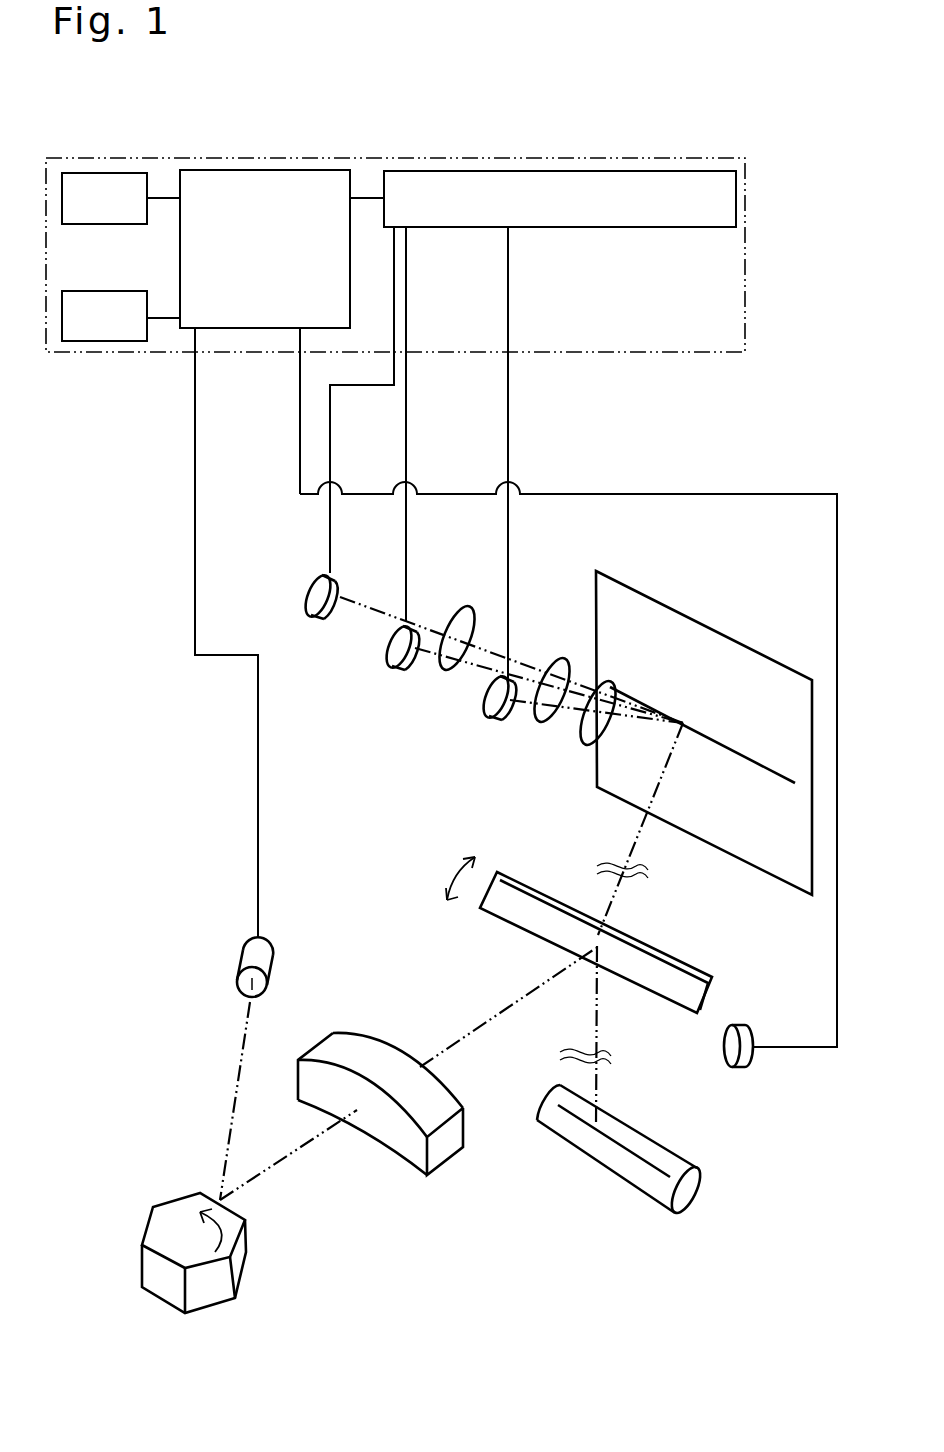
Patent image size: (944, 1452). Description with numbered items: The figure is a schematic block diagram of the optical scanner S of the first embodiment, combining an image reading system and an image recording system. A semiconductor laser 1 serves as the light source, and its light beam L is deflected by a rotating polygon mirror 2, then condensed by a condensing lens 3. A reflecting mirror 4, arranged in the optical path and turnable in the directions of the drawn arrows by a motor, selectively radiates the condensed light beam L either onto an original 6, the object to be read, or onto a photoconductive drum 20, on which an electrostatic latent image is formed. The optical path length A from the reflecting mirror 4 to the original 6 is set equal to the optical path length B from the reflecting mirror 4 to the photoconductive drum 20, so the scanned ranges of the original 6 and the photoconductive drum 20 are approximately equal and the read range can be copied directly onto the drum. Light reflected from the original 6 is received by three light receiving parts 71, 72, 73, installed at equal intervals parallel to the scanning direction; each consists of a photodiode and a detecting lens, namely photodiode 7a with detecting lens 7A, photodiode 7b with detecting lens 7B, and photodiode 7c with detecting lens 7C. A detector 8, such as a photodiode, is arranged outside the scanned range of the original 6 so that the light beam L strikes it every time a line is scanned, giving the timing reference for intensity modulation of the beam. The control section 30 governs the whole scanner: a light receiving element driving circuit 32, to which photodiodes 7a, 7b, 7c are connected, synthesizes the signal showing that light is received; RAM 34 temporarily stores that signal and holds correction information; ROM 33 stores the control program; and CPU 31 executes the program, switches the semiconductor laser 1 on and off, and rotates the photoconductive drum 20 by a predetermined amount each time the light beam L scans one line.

The control section 30 is at (741, 170).
The optical scanner S is at (595, 154).
The ROM 33 is at (124, 180).
The RAM 34 is at (122, 298).
The CPU 31 is at (290, 186).
The light receiving element driving circuit 32 is at (722, 208).
The light receiving part 73 is at (339, 594).
The detecting lens 7C is at (447, 623).
The photodiode 7c is at (308, 590).
The light receiving part 72 is at (431, 725).
The detecting lens 7B is at (533, 712).
The photodiode 7b is at (393, 655).
The light receiving part 71 is at (589, 624).
The detecting lens 7A is at (607, 698).
The photodiode 7a is at (525, 680).
The original 6 is at (752, 657).
The optical path length A is at (640, 829).
The optical path length B is at (595, 1035).
The reflecting mirror 4 is at (513, 888).
The semiconductor laser 1 is at (238, 968).
The light beam L is at (238, 1068).
The polygon mirror 2 is at (167, 1205).
The condensing lens 3 is at (447, 1153).
The detector 8 is at (745, 1057).
The photoconductive drum 20 is at (702, 1168).